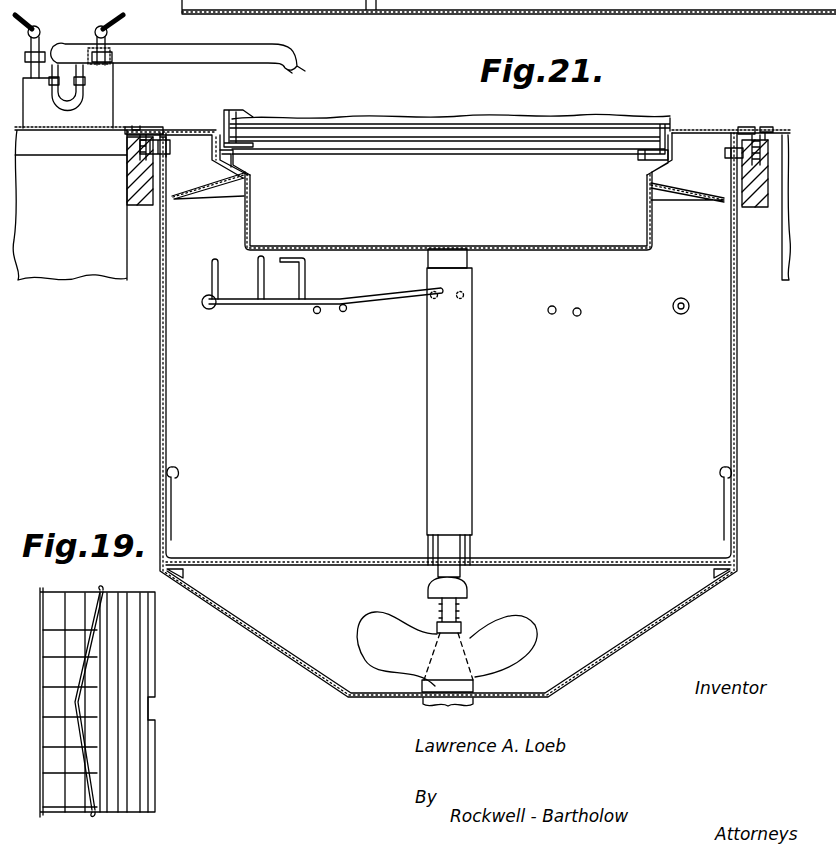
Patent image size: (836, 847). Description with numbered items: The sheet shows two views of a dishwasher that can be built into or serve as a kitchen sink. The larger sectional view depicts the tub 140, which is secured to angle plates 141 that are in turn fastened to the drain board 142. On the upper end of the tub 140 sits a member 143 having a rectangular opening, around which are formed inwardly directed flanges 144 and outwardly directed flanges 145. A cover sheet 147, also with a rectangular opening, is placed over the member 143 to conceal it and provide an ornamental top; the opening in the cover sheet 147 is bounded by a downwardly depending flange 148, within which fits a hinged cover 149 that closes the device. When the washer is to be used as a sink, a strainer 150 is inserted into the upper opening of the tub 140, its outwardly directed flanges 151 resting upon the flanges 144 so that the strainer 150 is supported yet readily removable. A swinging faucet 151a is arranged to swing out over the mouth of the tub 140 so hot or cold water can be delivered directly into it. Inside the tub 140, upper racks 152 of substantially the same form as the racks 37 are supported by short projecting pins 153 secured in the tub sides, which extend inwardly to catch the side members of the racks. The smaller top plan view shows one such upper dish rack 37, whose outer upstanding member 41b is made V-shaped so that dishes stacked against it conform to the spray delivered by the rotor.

In FIG. 21, the swinging faucet 151a is at (153, 56).
In FIG. 21, the cover sheet 147 is at (148, 127).
In FIG. 21, the member 143 is at (182, 130).
In FIG. 21, the downwardly depending flange 148 is at (242, 143).
In FIG. 21, the hinged cover 149 is at (375, 125).
In FIG. 21, the angle plates 141 is at (152, 150).
In FIG. 21, the drain board 142 is at (138, 192).
In FIG. 21, the inwardly directed flanges 144 is at (226, 163).
In FIG. 21, the outwardly directed flanges 145 is at (214, 195).
In FIG. 21, the outwardly directed flanges 151 is at (636, 160).
In FIG. 21, the strainer 150 is at (653, 229).
In FIG. 21, the upper racks 152 is at (283, 308).
In FIG. 21, the short projecting pins 153 is at (341, 312).
In FIG. 21, the tub 140 is at (161, 346).
In FIG. 19, the upper dish rack 37 is at (158, 660).
In FIG. 19, the outer upstanding member 41b is at (82, 737).